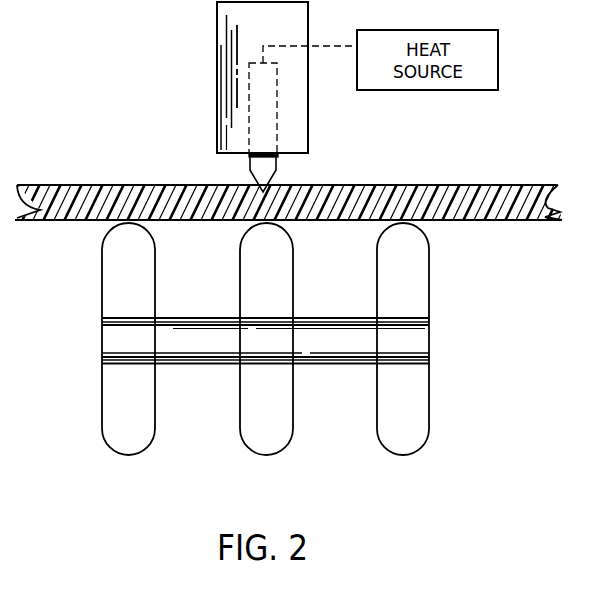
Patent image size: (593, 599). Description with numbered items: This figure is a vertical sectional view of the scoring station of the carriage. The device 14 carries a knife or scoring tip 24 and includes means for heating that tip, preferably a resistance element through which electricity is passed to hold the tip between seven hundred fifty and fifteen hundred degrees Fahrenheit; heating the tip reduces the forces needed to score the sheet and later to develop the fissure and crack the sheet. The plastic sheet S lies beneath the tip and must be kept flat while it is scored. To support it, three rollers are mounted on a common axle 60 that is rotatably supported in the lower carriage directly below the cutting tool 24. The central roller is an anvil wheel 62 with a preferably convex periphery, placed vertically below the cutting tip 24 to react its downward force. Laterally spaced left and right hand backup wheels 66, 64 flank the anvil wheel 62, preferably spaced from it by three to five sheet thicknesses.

The device 14 is at (192, 66).
The knife or scoring tip 24 is at (278, 165).
The plastic sheet S is at (485, 184).
The common axle 60 is at (325, 364).
The anvil wheel 62 is at (293, 270).
The right hand backup wheel 64 is at (429, 268).
The left hand backup wheel 66 is at (102, 272).